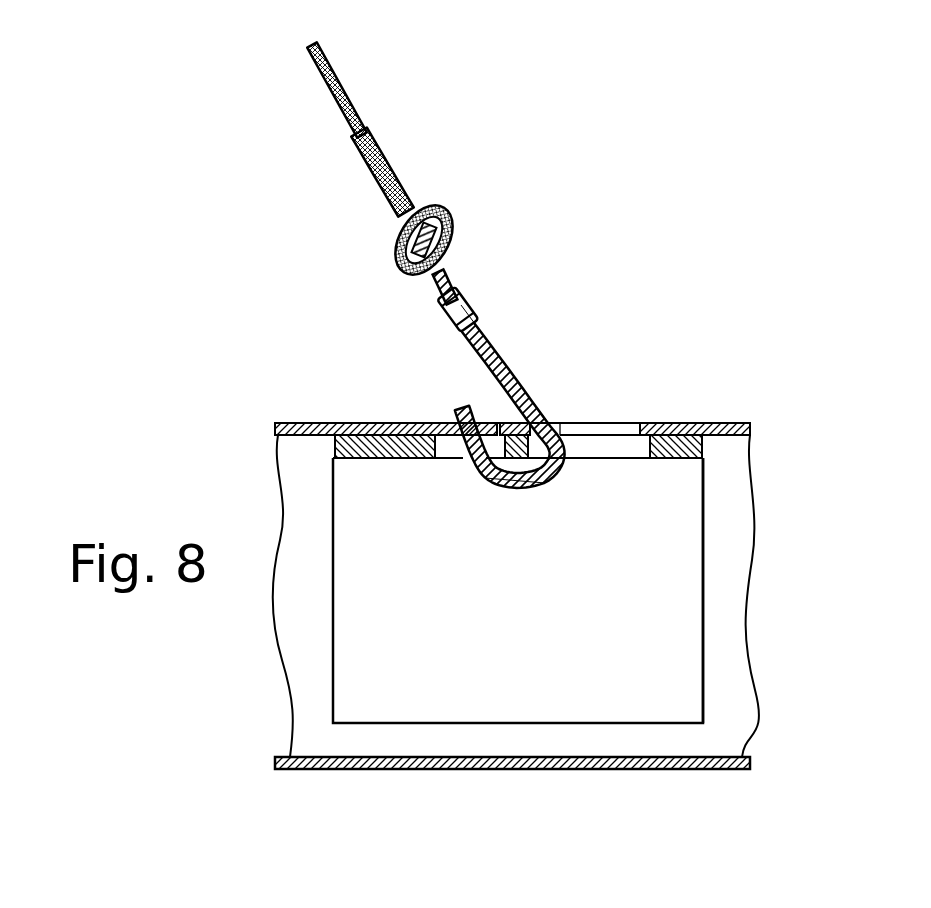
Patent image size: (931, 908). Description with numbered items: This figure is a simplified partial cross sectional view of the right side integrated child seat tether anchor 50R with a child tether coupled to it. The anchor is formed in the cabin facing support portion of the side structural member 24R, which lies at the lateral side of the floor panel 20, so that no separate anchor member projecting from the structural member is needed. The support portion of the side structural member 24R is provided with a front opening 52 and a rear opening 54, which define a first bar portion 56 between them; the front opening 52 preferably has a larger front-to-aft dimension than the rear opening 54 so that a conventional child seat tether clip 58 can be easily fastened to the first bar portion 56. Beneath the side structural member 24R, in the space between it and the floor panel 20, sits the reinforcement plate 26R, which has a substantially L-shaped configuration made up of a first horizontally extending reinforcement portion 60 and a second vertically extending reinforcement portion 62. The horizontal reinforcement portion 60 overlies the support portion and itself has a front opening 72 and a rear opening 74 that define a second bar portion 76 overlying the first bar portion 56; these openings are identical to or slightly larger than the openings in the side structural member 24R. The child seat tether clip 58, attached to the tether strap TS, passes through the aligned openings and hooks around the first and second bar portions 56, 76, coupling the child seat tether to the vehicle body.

The tether strap TS is at (396, 140).
The child seat tether clip 58 is at (512, 308).
The right side integrated child seat tether anchor 50R is at (620, 376).
The side structural member 24R is at (317, 418).
The rear opening 54 is at (630, 421).
The first bar portion 56 is at (528, 396).
The front opening 52 is at (448, 423).
The first horizontally extending reinforcement portion 60 is at (400, 460).
The front opening 72 is at (457, 460).
The second bar portion 76 is at (562, 468).
The rear opening 74 is at (650, 448).
The second vertically extending reinforcement portion 62 is at (673, 583).
The reinforcement plate 26R is at (703, 658).
The floor panel 20 is at (322, 757).